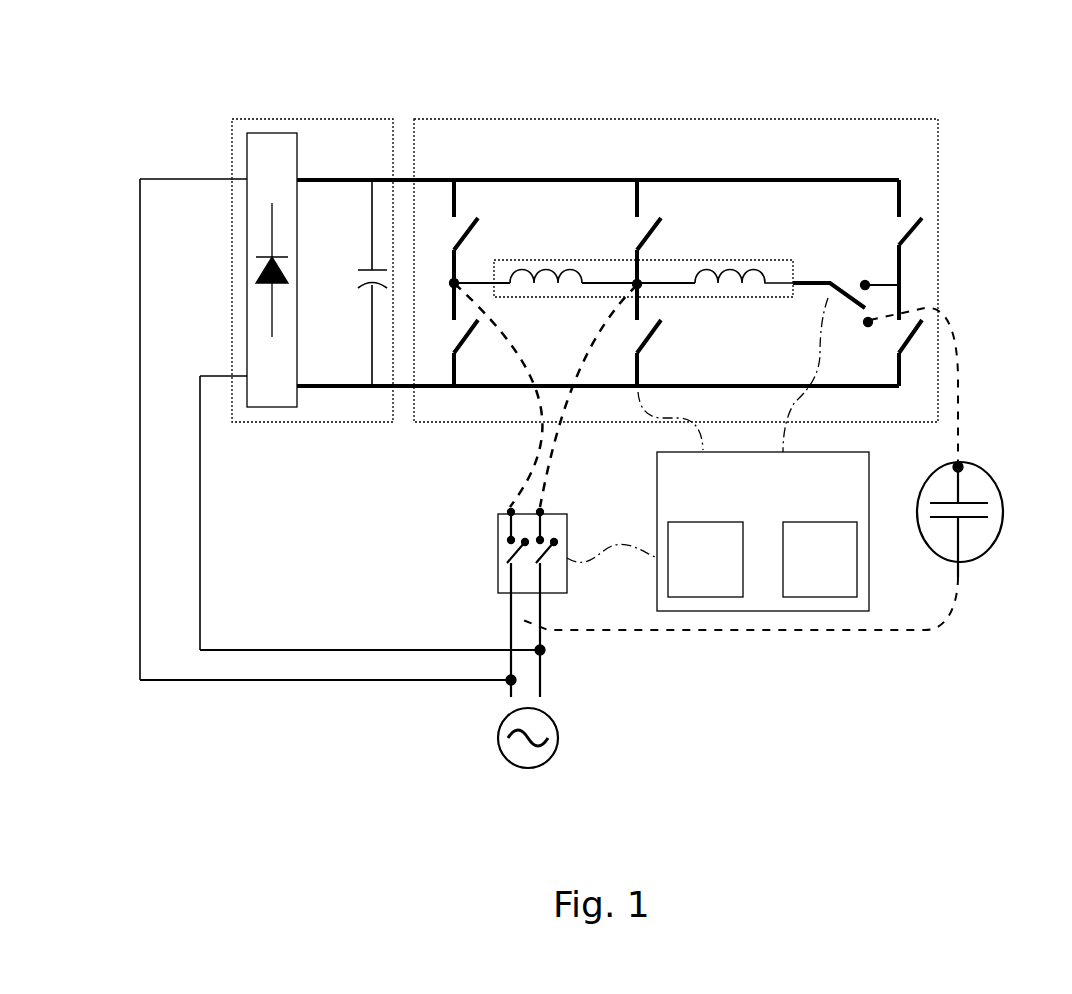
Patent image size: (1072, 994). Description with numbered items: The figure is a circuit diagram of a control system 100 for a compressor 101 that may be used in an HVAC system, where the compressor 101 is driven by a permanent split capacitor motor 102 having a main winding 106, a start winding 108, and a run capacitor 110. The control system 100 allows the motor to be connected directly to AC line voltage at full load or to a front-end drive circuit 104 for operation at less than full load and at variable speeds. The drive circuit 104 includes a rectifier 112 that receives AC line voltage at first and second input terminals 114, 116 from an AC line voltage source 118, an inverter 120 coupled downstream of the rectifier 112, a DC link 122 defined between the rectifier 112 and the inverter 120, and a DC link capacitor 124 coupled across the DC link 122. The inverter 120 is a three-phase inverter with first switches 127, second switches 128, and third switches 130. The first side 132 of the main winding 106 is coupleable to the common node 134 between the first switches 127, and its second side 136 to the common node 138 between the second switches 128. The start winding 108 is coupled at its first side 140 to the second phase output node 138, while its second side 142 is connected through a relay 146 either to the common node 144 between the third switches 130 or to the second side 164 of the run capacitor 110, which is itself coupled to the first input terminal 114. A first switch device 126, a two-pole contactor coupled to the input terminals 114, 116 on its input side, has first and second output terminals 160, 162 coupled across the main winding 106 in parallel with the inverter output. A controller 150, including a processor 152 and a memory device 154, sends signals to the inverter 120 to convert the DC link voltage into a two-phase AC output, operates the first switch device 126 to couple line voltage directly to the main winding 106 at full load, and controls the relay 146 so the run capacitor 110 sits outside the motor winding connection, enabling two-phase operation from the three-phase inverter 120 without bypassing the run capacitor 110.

The control system 100 is at (181, 57).
The compressor 101 is at (781, 224).
The permanent split capacitor (PSC) motor 102 is at (778, 258).
The front-end drive circuit 104 is at (232, 118).
The main winding 106 is at (523, 265).
The start winding 108 is at (703, 265).
The run capacitor 110 is at (980, 502).
The rectifier 112 is at (247, 155).
The first input terminal 114 is at (511, 630).
The second input terminal 116 is at (540, 668).
The AC line voltage source 118 is at (499, 722).
The inverter 120 is at (448, 118).
The DC link 122 is at (357, 178).
The DC link capacitor 124 is at (368, 270).
The first switch device 126 is at (498, 525).
The first switches 127 is at (472, 225).
The second switches 128 is at (660, 225).
The third switches 130 is at (922, 223).
The first side of main winding 132 is at (475, 283).
The common node (first phase output) 134 is at (454, 283).
The second side of main winding 136 is at (622, 282).
The common node (second phase output) 138 is at (640, 288).
The first side of start winding 140 is at (673, 283).
The second side of start winding 142 is at (777, 283).
The common node (third phase output) 144 is at (897, 283).
The relay 146 is at (868, 300).
The controller 150 is at (657, 460).
The processor 152 is at (705, 559).
The memory device 154 is at (820, 559).
The first output terminal 160 is at (510, 493).
The second output terminal 162 is at (540, 490).
The second side of run capacitor 164 is at (963, 467).